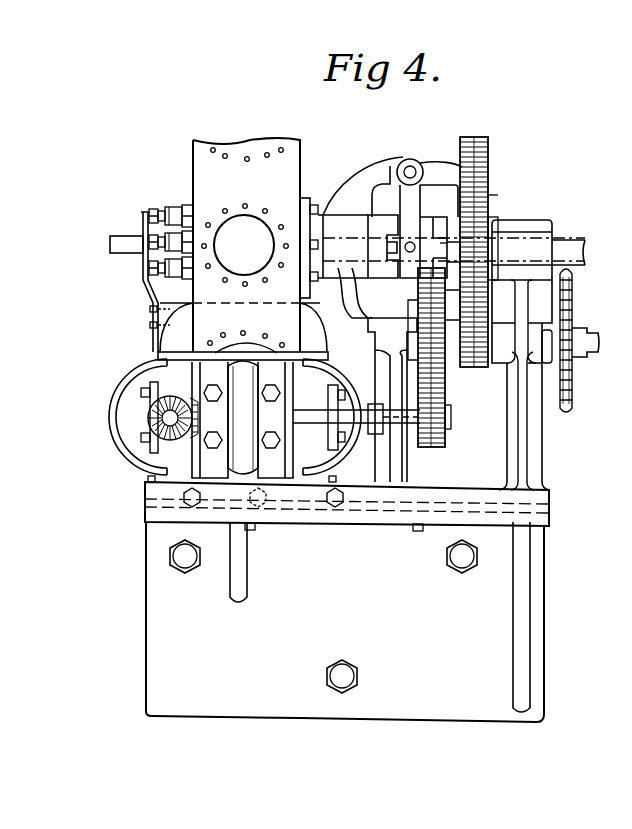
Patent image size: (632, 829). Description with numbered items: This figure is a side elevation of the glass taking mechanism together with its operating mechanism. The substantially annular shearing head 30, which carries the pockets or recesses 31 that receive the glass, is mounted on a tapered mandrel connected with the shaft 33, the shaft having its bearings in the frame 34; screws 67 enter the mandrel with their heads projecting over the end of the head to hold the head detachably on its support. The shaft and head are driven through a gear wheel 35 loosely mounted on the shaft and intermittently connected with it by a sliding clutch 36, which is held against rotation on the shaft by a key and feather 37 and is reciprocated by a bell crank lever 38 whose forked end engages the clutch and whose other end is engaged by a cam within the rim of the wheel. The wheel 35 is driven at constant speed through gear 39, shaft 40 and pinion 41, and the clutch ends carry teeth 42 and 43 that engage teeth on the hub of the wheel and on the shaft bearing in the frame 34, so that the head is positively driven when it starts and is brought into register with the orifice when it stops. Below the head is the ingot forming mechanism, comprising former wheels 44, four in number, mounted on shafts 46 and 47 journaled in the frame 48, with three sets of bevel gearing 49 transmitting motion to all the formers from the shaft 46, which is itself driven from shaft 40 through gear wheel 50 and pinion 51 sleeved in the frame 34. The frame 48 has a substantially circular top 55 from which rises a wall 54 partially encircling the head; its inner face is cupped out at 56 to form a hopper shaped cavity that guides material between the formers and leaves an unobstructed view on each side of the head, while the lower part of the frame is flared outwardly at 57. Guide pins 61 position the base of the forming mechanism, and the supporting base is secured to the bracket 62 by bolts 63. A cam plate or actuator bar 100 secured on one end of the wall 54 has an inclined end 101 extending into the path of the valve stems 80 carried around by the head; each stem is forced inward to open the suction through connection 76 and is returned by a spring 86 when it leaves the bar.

The shearing head 30 is at (198, 155).
The recess 31 is at (244, 245).
The shaft 33 is at (566, 242).
The frame 34 is at (518, 430).
The gear wheel 35 is at (487, 206).
The sliding clutch 36 is at (422, 228).
The key and feather 37 is at (453, 247).
The bell crank lever 38 is at (474, 166).
The gear 39 is at (574, 318).
The shaft 40 is at (586, 356).
The pinion 41 is at (426, 310).
The teeth 42 is at (440, 234).
The teeth 43 is at (384, 218).
The former wheels 44 is at (135, 390).
The shaft 46 is at (336, 425).
The shaft 47 is at (162, 418).
The frame 48 is at (312, 388).
The bevel gearing 49 is at (172, 398).
The gear wheel 50 is at (443, 385).
The pinion 51 is at (432, 428).
The wall 54 is at (165, 346).
The circular top 55 is at (327, 356).
The cupped recess 56 is at (226, 338).
The flared opening 57 is at (278, 470).
The guide pins 61 is at (148, 483).
The bracket 62 is at (542, 520).
The bolts 63 is at (250, 530).
The screws 67 is at (186, 205).
The suction connection 76 is at (112, 246).
The valve stem 80 is at (160, 212).
The spring 86 is at (178, 208).
The actuator bar 100 is at (152, 308).
The inclined end 101 is at (142, 226).